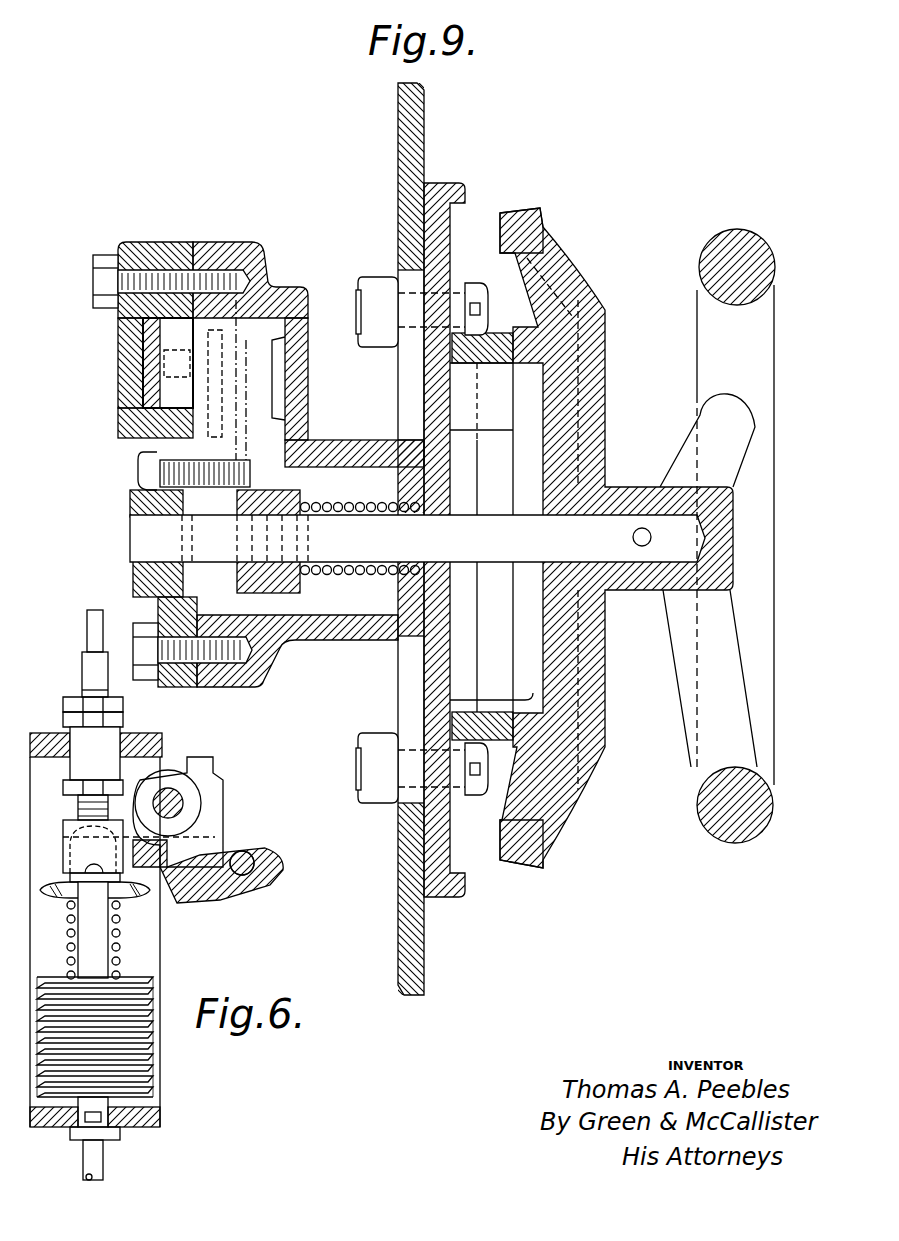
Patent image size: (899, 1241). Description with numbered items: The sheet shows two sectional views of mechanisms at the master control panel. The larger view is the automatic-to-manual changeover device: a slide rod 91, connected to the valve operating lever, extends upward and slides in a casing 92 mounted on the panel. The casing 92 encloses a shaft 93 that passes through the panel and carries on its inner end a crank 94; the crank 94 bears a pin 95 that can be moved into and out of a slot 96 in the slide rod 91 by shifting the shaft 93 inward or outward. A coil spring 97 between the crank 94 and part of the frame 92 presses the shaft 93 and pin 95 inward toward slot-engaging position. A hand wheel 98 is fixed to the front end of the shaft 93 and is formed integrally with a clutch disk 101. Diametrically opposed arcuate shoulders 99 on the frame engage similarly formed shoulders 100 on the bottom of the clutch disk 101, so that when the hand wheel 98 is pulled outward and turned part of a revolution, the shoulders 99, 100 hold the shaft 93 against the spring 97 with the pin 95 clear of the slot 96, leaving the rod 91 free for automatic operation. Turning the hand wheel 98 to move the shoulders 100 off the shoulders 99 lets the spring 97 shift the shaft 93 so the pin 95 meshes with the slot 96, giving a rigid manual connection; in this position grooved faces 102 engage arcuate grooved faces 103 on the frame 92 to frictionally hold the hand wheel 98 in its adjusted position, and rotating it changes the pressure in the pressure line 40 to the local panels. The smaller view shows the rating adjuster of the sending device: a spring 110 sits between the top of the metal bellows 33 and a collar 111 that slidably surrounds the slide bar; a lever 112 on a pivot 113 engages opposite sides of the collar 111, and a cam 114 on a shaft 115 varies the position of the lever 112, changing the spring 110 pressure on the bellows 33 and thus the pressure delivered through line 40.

In FIG. 9, the rod 91 is at (150, 350).
In FIG. 9, the casing 92 is at (336, 636).
In FIG. 9, the shaft 93 is at (380, 545).
In FIG. 9, the crank 94 is at (224, 372).
In FIG. 9, the pin 95 is at (200, 352).
In FIG. 9, the slot 96 is at (175, 405).
In FIG. 9, the coil spring 97 is at (343, 578).
In FIG. 9, the hand wheel 98 is at (751, 238).
In FIG. 9, the arcuate shoulders 99 is at (483, 333).
In FIG. 9, the shoulders 100 is at (530, 362).
In FIG. 9, the clutch disk 101 is at (600, 312).
In FIG. 9, the grooved faces 102 is at (531, 210).
In FIG. 9, the arcuate grooved faces 103 is at (503, 655).
In FIG. 6, the metal bellows 33 is at (150, 1062).
In FIG. 6, the pressure line 40 is at (96, 1158).
In FIG. 6, the spring 110 is at (122, 950).
In FIG. 6, the collar 111 is at (60, 895).
In FIG. 6, the lever 112 is at (128, 880).
In FIG. 6, the pivot 113 is at (258, 866).
In FIG. 6, the cam 114 is at (208, 818).
In FIG. 6, the shaft 115 is at (175, 798).